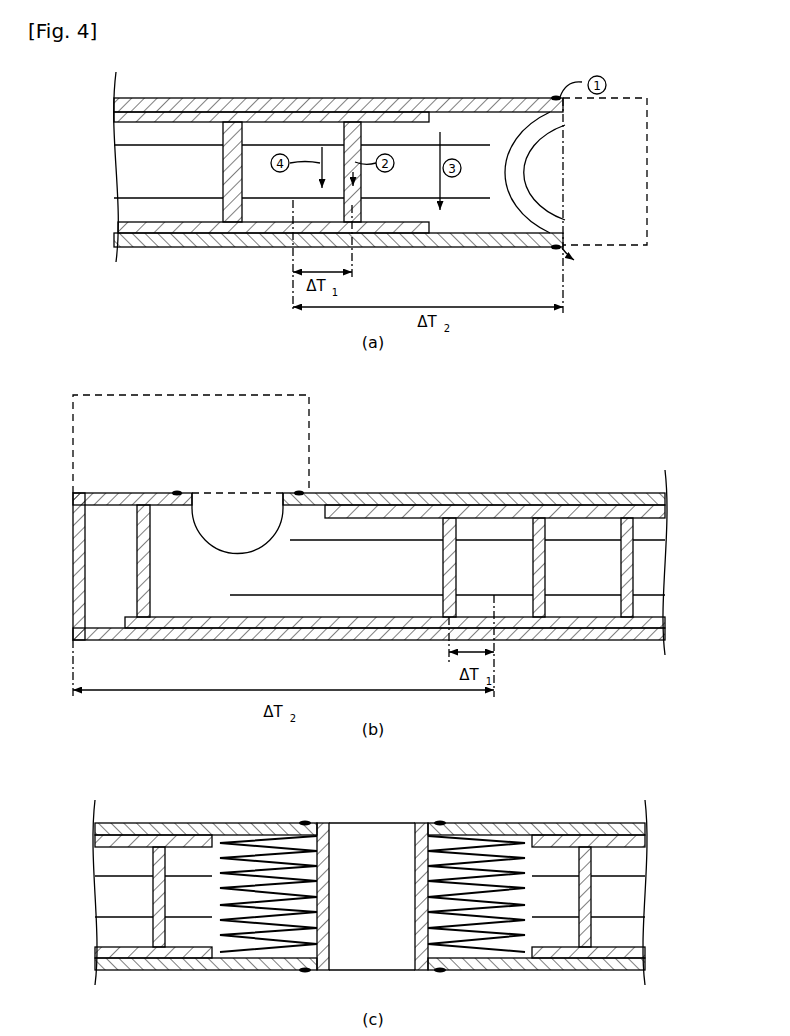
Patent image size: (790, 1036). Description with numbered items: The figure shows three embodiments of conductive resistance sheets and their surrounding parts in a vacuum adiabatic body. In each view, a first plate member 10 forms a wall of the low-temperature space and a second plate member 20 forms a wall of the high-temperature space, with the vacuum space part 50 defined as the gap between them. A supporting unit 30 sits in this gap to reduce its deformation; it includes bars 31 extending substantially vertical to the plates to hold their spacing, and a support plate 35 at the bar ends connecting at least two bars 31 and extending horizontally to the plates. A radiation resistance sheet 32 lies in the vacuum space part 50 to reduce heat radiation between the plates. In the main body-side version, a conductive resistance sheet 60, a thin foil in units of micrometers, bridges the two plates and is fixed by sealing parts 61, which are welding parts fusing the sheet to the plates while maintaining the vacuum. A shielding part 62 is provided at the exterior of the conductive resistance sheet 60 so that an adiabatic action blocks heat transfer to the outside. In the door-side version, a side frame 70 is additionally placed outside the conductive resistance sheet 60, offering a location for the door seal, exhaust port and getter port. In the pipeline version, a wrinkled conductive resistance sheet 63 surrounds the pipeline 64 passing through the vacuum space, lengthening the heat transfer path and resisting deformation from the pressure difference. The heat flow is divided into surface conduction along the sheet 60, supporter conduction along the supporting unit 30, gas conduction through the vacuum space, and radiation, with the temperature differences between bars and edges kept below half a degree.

The first plate member 10 is at (157, 241).
The second plate member 20 is at (431, 110).
The supporting unit 30 is at (344, 130).
The bar 31 is at (443, 520).
The radiation resistance sheet 32 is at (478, 145).
The support plate 35 is at (345, 112).
The vacuum space part 50 is at (657, 565).
The conductive resistance sheet 60 is at (505, 182).
The sealing part 61 is at (556, 96).
The shielding part 62 is at (647, 122).
The wrinkled conductive resistance sheet 63 is at (263, 835).
The pipeline 64 is at (414, 840).
The side frame 70 is at (131, 493).